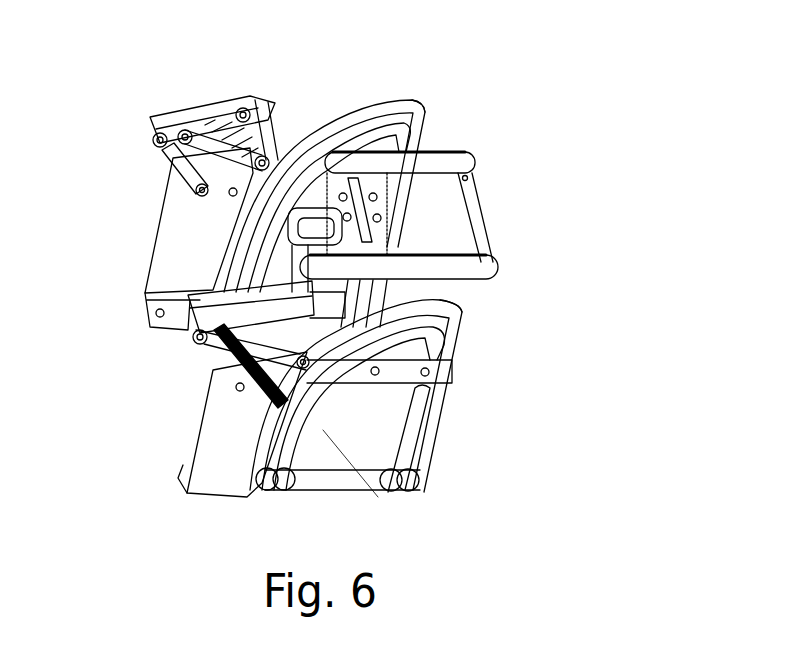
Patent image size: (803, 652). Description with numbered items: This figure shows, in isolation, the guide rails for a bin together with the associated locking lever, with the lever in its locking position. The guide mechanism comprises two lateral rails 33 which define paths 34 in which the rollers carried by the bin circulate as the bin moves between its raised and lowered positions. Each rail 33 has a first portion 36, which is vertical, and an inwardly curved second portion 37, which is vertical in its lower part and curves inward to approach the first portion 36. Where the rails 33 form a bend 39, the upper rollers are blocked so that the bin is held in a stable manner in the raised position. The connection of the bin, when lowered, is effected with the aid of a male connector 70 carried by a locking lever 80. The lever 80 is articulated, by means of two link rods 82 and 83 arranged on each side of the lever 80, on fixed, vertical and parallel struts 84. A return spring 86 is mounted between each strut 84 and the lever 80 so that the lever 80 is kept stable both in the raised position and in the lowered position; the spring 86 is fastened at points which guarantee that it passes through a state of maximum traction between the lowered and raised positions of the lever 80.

The lateral rail 33 is at (348, 112).
The path 34 is at (337, 115).
The first portion 36 is at (420, 474).
The inwardly curved second portion 37 is at (375, 497).
The bend 39 is at (418, 102).
The male connector 70 is at (402, 232).
The locking lever 80 is at (458, 152).
The link rod 82 is at (155, 145).
The link rod 83 is at (207, 103).
The strut 84 is at (173, 220).
The return spring 86 is at (173, 108).